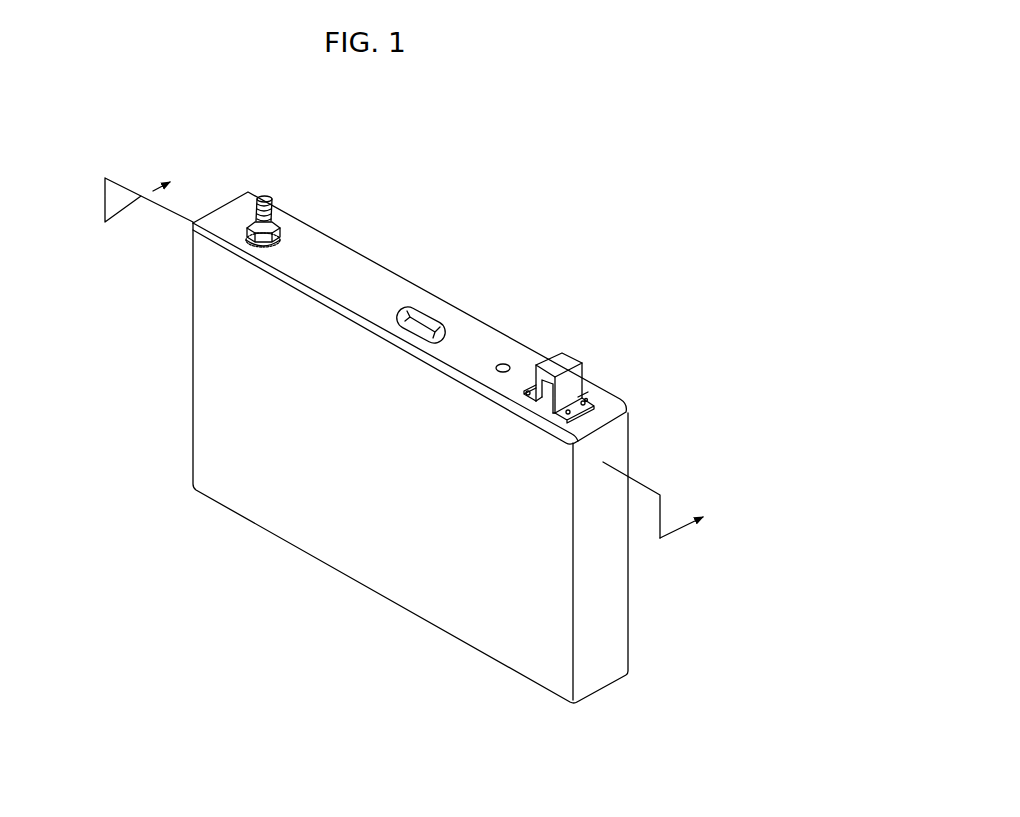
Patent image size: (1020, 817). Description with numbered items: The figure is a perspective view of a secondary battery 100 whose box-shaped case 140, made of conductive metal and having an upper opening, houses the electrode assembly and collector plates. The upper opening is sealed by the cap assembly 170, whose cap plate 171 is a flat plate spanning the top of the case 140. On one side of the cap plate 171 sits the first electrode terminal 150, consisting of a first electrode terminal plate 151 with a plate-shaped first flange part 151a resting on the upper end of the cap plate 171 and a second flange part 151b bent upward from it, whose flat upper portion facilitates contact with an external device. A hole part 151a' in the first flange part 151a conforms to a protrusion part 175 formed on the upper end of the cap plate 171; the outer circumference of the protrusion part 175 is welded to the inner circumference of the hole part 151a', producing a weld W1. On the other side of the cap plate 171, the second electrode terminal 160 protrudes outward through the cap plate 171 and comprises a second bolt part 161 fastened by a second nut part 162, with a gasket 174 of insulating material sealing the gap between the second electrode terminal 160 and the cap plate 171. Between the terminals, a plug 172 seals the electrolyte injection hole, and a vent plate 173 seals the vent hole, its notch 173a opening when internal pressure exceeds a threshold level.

The secondary battery 100 is at (708, 158).
The case 140 is at (371, 569).
The first electrode terminal 150 is at (617, 372).
The first electrode terminal plate 151 is at (617, 419).
The first flange part 151a is at (636, 391).
The hole part 151a' is at (618, 411).
The second flange part 151b is at (579, 361).
The second electrode terminal 160 is at (227, 206).
The second bolt part 161 is at (273, 205).
The second nut part 162 is at (253, 225).
The cap assembly 170 is at (416, 298).
The cap plate 171 is at (369, 269).
The plug 172 is at (506, 364).
The vent plate 173 is at (454, 290).
The notch 173a is at (432, 317).
The gasket 174 is at (247, 237).
The protrusion part 175 is at (580, 398).
The weld W1 is at (588, 399).